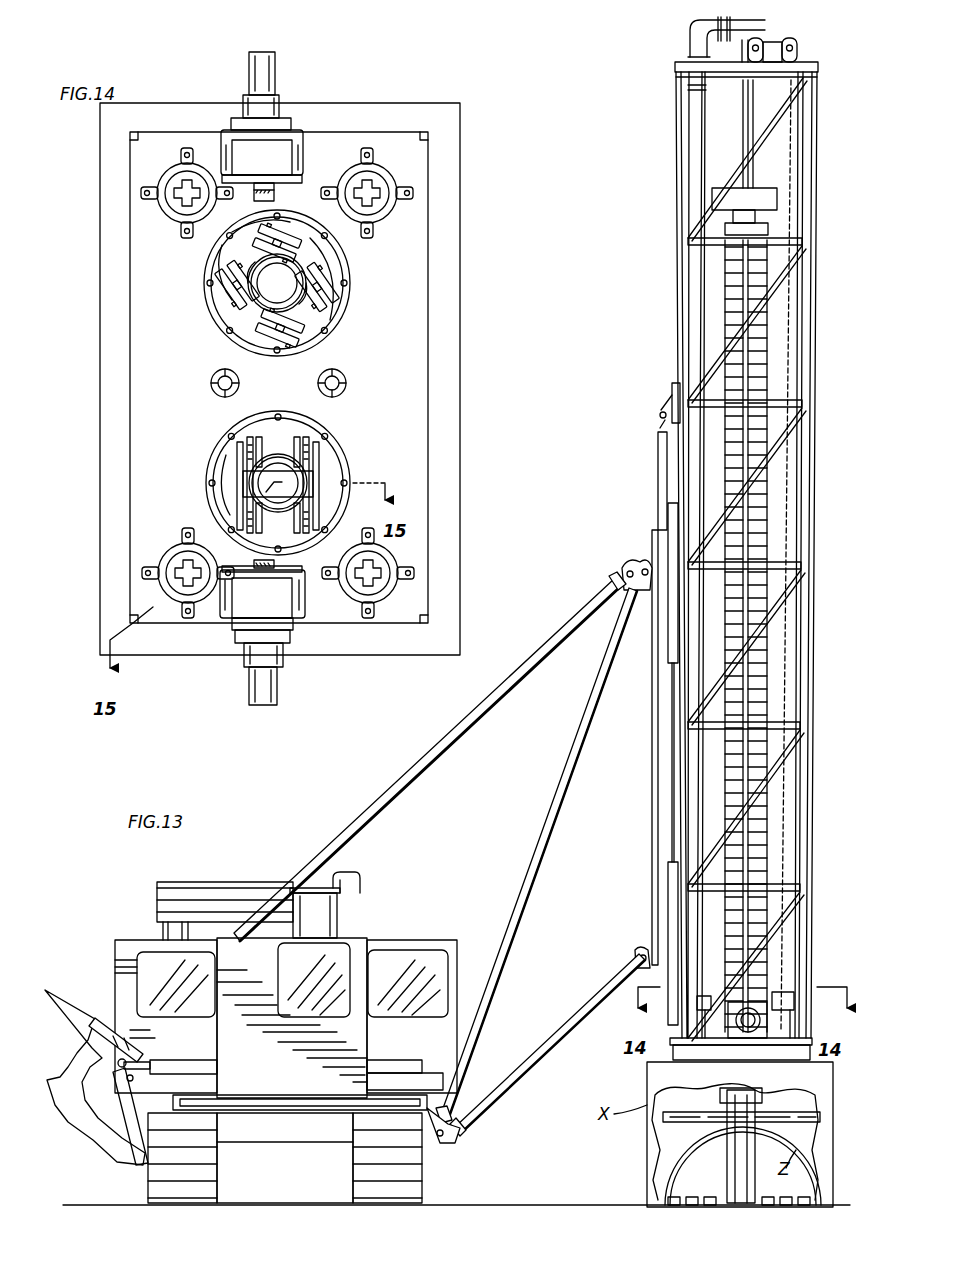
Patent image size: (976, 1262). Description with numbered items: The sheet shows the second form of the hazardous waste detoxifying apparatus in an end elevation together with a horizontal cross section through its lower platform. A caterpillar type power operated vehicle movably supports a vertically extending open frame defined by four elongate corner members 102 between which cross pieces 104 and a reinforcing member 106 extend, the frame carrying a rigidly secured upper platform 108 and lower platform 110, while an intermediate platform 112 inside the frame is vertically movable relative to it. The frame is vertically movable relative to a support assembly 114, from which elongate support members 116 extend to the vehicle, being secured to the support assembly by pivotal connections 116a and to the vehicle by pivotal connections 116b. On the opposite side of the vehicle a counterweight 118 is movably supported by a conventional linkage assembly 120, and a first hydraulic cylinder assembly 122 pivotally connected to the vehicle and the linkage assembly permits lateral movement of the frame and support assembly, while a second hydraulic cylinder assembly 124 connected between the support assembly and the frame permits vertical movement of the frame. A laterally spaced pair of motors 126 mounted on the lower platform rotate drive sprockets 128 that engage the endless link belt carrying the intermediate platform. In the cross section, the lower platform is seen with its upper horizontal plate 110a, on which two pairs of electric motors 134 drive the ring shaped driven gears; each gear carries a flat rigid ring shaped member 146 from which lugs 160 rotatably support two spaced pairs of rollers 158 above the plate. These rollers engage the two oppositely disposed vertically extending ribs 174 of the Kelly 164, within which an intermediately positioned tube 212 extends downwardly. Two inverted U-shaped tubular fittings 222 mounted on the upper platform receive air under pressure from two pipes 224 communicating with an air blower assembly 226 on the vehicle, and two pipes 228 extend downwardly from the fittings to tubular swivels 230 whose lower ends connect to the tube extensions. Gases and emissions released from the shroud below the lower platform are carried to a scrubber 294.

In FIG. 13, the elongate corner members 102 is at (812, 642).
In FIG. 13, the cross pieces 104 is at (795, 402).
In FIG. 13, the reinforcing member 106 is at (785, 602).
In FIG. 13, the upper platform 108 is at (815, 64).
In FIG. 14, the lower platform 110 is at (423, 476).
In FIG. 13, the lower platform 110 is at (760, 1062).
In FIG. 14, the upper horizontal plate 110a is at (378, 432).
In FIG. 13, the intermediate platform 112 is at (760, 190).
In FIG. 13, the support assembly 114 is at (662, 742).
In FIG. 13, the elongate support members 116 is at (455, 746).
In FIG. 13, the pivotal connections 116a is at (634, 564).
In FIG. 13, the pivotal connections 116b is at (442, 1145).
In FIG. 13, the counterweight 118 is at (60, 1002).
In FIG. 13, the linkage assembly 120 is at (106, 1022).
In FIG. 13, the first hydraulic cylinder assembly 122 is at (176, 1062).
In FIG. 13, the second hydraulic cylinder assembly 124 is at (660, 470).
In FIG. 14, the motors 126 is at (300, 146).
In FIG. 13, the motors 126 is at (763, 1002).
In FIG. 14, the drive sprockets 128 is at (300, 176).
In FIG. 14, the electric motors 134 is at (175, 208).
In FIG. 14, the flat rigid ring shaped member 146 is at (347, 262).
In FIG. 14, the rollers 158 is at (325, 246).
In FIG. 14, the lugs 160 is at (287, 232).
In FIG. 14, the Kelly 164 is at (228, 281).
In FIG. 14, the ribs 174 is at (262, 342).
In FIG. 13, the tube 212 is at (754, 217).
In FIG. 13, the inverted U-shaped tubular fittings 222 is at (765, 24).
In FIG. 13, the pipes 224 is at (692, 136).
In FIG. 13, the air blower assembly 226 is at (160, 925).
In FIG. 13, the pipes 228 is at (737, 102).
In FIG. 13, the tubular swivels 230 is at (690, 54).
In FIG. 13, the scrubber 294 is at (338, 910).